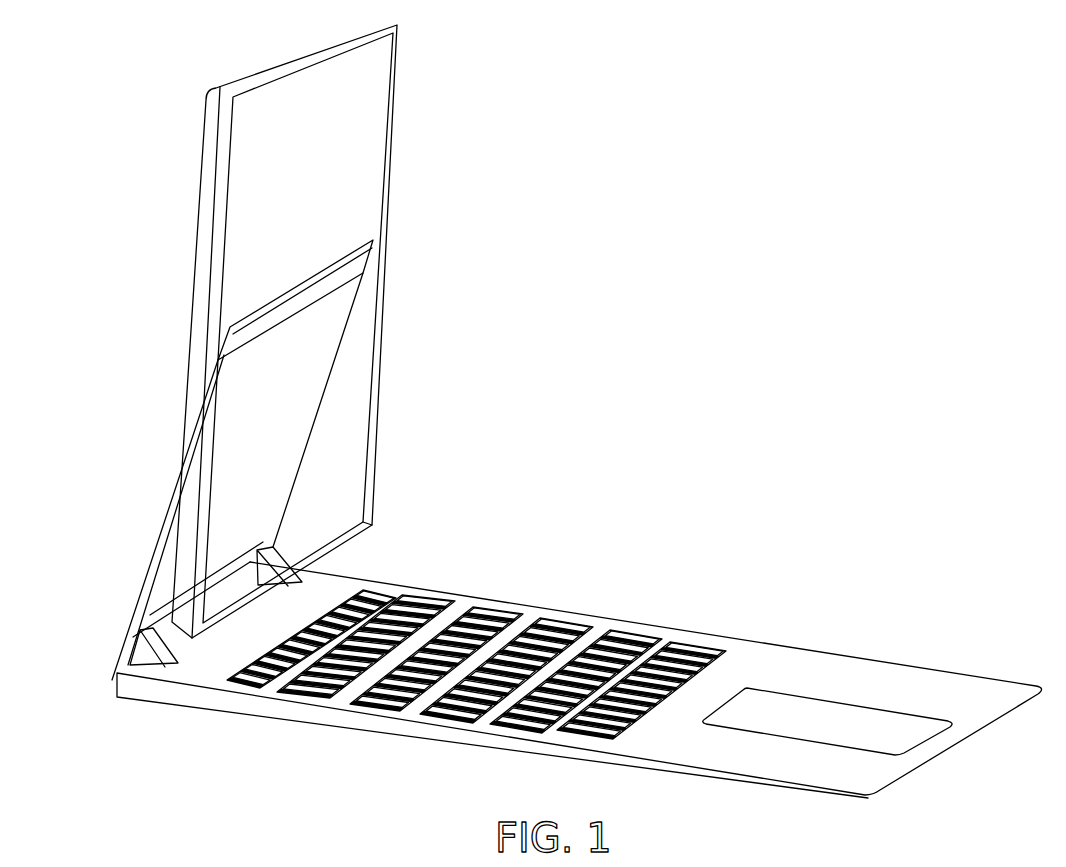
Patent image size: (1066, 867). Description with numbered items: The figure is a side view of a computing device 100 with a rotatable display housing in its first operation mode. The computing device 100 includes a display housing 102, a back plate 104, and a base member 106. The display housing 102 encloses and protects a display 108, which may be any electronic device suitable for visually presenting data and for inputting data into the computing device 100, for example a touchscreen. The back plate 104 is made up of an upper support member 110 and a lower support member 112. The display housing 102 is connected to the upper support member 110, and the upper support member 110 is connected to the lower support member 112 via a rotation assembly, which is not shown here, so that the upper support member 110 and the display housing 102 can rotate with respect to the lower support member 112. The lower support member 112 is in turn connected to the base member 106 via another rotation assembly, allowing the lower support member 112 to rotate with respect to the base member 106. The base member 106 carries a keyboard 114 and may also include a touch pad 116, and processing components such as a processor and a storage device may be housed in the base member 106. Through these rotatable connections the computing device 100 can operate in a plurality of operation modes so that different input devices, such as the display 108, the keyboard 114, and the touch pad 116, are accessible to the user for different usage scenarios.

The computing device 100 is at (84, 46).
The display housing 102 is at (198, 175).
The back plate 104 is at (150, 460).
The base member 106 is at (857, 650).
The display 108 is at (368, 377).
The upper support member 110 is at (340, 253).
The lower support member 112 is at (152, 560).
The keyboard 114 is at (548, 604).
The touch pad 116 is at (857, 705).